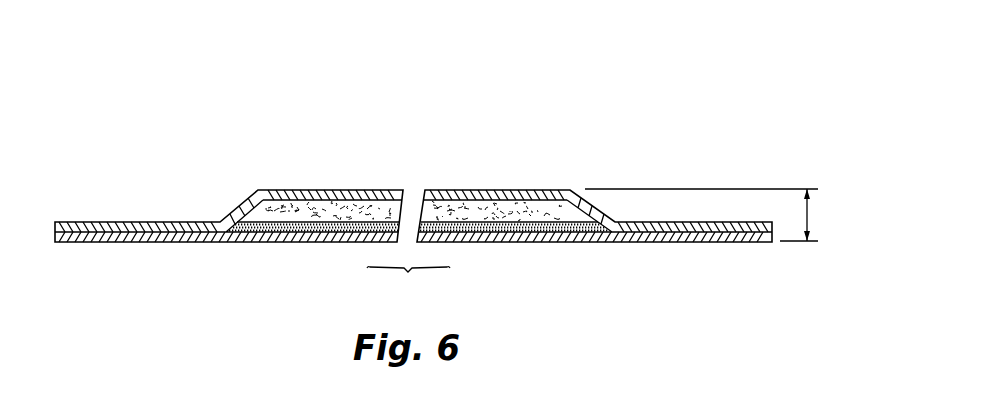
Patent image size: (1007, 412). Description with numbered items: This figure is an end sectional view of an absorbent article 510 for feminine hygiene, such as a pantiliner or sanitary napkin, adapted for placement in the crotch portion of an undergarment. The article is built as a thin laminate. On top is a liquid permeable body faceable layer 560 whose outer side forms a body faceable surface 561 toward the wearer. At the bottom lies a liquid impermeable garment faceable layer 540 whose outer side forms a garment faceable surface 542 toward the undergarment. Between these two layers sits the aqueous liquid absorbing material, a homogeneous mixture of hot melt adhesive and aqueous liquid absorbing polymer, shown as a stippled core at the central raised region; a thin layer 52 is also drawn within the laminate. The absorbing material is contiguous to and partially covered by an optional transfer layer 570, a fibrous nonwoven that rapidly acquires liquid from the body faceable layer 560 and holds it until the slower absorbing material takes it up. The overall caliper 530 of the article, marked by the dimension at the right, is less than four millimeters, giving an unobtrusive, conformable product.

The absorbent article 510 is at (187, 135).
The liquid permeable body faceable layer 560 is at (72, 226).
The liquid impermeable garment faceable layer 540 is at (71, 240).
The transfer layer 570 is at (291, 190).
The body faceable surface 561 is at (378, 190).
The adhesive layer 52 is at (263, 225).
The garment faceable surface 542 is at (493, 237).
The caliper 530 is at (808, 217).